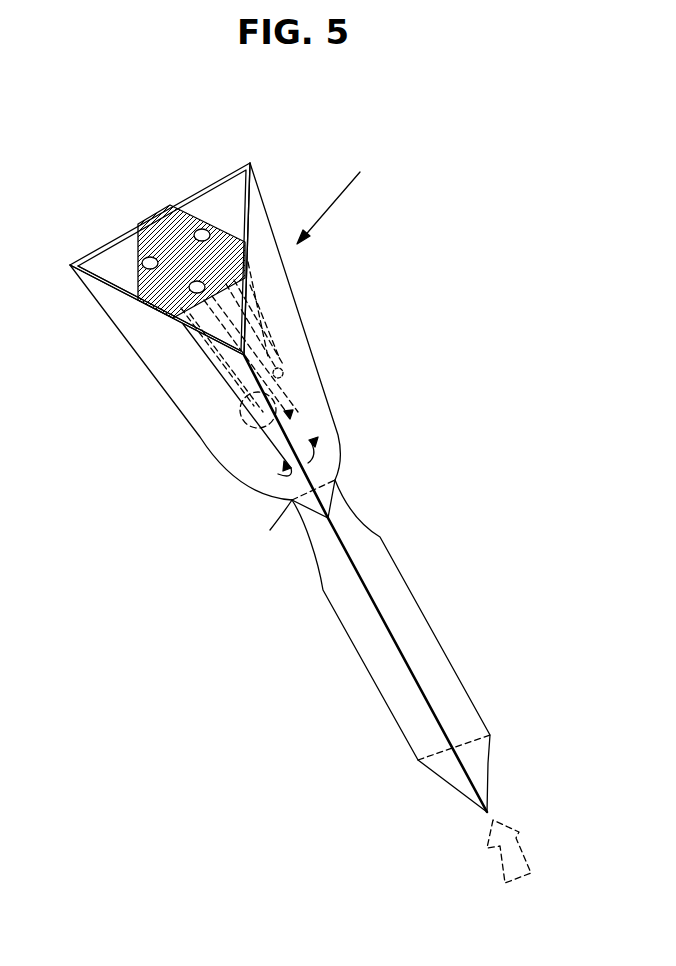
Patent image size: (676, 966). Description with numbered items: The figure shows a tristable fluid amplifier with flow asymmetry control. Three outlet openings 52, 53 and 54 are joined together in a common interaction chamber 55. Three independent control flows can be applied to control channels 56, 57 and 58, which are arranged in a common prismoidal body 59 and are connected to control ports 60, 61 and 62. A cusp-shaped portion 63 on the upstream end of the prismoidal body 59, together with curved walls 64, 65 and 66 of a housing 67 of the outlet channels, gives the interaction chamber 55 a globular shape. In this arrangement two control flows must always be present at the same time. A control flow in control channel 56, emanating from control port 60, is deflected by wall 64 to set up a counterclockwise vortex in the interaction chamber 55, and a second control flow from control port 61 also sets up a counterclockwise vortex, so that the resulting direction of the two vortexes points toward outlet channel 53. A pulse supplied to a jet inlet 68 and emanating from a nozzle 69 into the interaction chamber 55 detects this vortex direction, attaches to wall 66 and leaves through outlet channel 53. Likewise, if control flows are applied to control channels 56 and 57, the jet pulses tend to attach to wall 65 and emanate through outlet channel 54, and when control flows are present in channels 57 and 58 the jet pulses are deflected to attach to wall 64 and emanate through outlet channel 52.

The outlet opening 52 is at (103, 257).
The outlet opening 53 is at (220, 186).
The outlet opening 54 is at (199, 313).
The interaction chamber 55 is at (313, 441).
The control channel 56 is at (145, 258).
The control channel 57 is at (203, 229).
The control channel 58 is at (145, 305).
The prismoidal body 59 is at (170, 210).
The control port 60 is at (226, 398).
The control port 61 is at (249, 423).
The control port 62 is at (280, 368).
The cusp-shaped portion 63 is at (296, 410).
The curved wall 64 is at (250, 495).
The curved wall 65 is at (284, 512).
The curved wall 66 is at (341, 458).
The housing 67 is at (342, 198).
The jet inlet 68 is at (411, 727).
The nozzle 69 is at (331, 503).